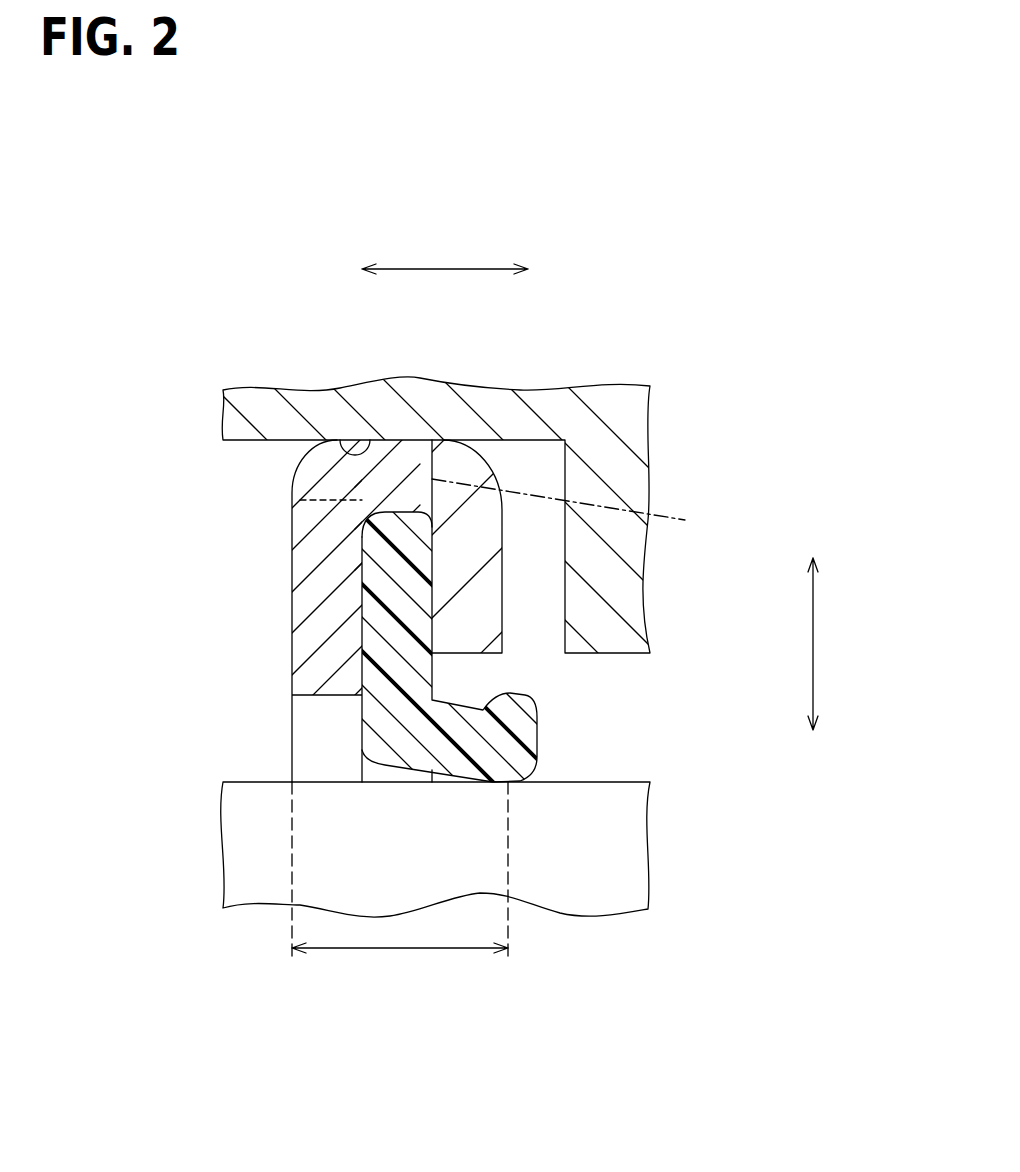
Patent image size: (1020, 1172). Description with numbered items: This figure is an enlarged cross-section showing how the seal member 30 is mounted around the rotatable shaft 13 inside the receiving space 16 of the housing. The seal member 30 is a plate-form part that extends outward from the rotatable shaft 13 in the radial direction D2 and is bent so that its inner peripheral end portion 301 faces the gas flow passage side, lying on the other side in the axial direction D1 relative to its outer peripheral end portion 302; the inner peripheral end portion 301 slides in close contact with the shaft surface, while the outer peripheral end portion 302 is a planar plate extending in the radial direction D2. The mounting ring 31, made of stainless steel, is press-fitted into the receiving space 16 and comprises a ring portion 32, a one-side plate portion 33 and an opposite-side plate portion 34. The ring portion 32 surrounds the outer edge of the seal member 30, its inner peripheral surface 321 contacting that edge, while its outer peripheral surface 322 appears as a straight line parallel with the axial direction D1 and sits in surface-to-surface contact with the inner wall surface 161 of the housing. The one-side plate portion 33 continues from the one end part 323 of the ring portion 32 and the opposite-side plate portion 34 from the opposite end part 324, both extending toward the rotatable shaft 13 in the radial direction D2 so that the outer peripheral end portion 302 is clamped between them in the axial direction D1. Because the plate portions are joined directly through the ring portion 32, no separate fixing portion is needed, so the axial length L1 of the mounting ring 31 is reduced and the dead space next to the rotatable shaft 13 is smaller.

The rotatable shaft 13 is at (268, 838).
The receiving space 16 is at (275, 461).
The inner wall surface 161 is at (338, 440).
The seal member 30 is at (541, 742).
The inner peripheral end portion 301 is at (462, 733).
The outer peripheral end portion 302 is at (390, 592).
The mounting ring 31 is at (487, 462).
The ring portion 32 is at (440, 442).
The inner peripheral surface 321 is at (392, 535).
The outer peripheral surface 322 is at (406, 462).
The one end part 323 is at (300, 500).
The opposite end part 324 is at (584, 508).
The one-side plate portion 33 is at (305, 643).
The opposite-side plate portion 34 is at (477, 597).
The axial direction D1 is at (440, 268).
The radial direction D2 is at (816, 643).
The length of the mounting ring L1 is at (398, 948).